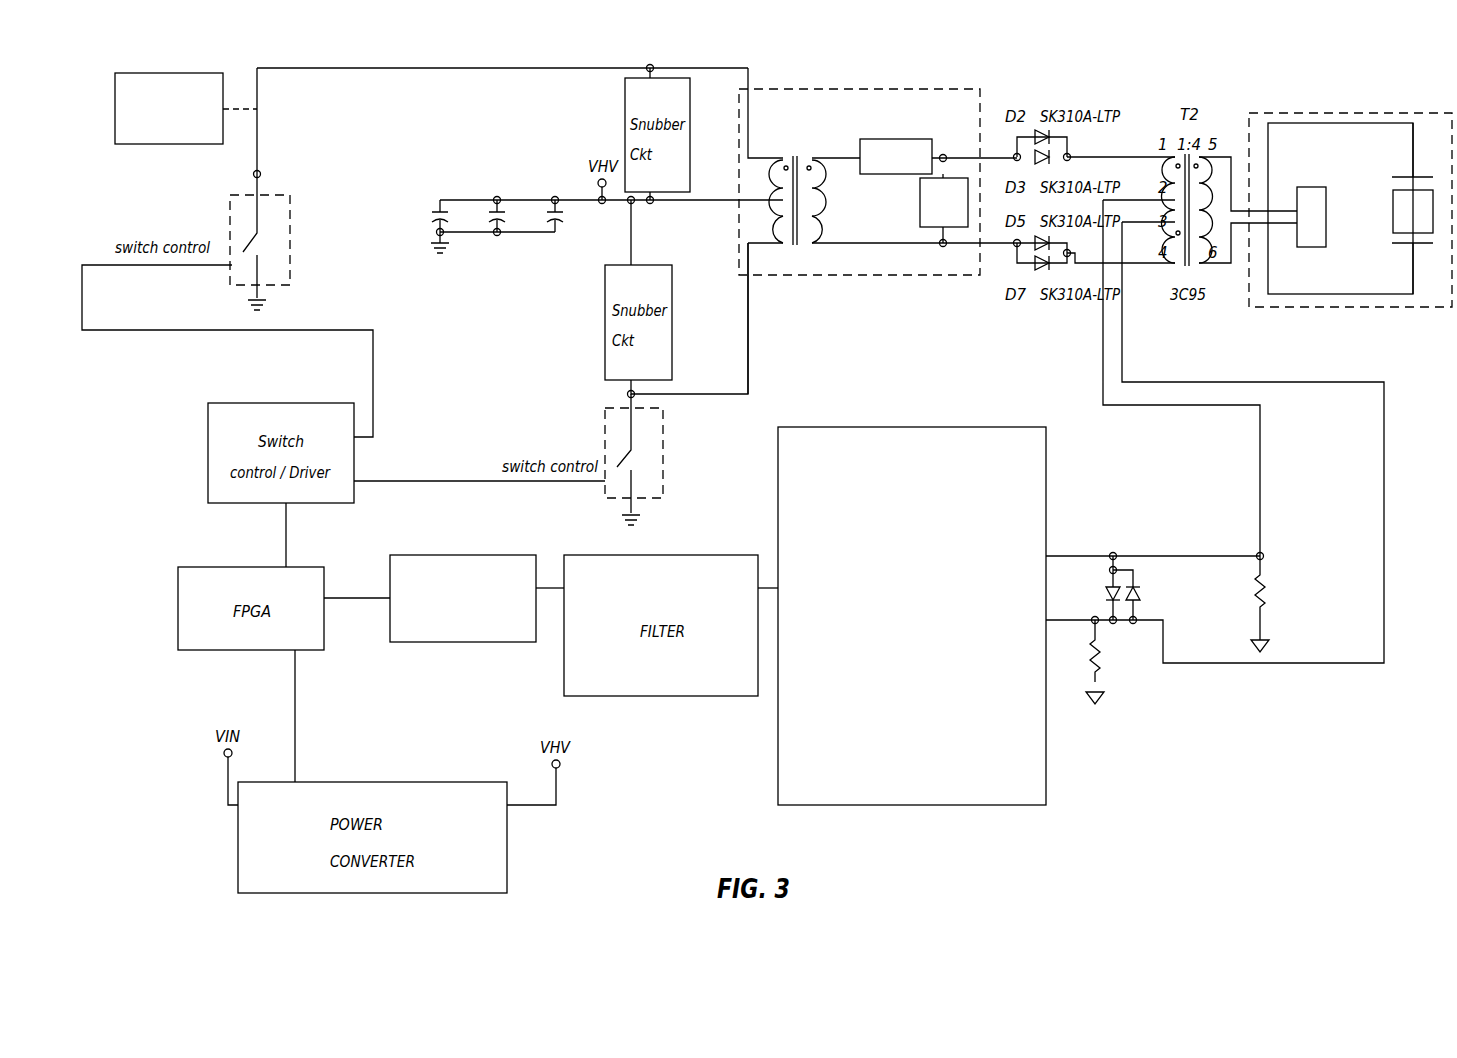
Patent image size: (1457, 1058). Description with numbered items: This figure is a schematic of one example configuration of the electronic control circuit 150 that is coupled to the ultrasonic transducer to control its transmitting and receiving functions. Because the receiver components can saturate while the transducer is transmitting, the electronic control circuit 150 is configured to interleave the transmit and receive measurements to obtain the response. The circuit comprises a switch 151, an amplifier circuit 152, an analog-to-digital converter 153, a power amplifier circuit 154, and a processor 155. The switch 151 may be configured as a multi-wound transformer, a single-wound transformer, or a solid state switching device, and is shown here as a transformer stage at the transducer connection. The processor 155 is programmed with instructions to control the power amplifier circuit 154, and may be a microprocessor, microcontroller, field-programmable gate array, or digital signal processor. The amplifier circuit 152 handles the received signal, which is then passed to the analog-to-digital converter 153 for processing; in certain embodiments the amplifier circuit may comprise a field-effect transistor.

The electronic control circuit 150 is at (1247, 790).
The switch 151 is at (1206, 86).
The amplifier circuit 152 is at (1053, 727).
The analog-to-digital converter 153 is at (463, 651).
The power amplifier circuit 154 is at (758, 326).
The processor 155 is at (174, 150).